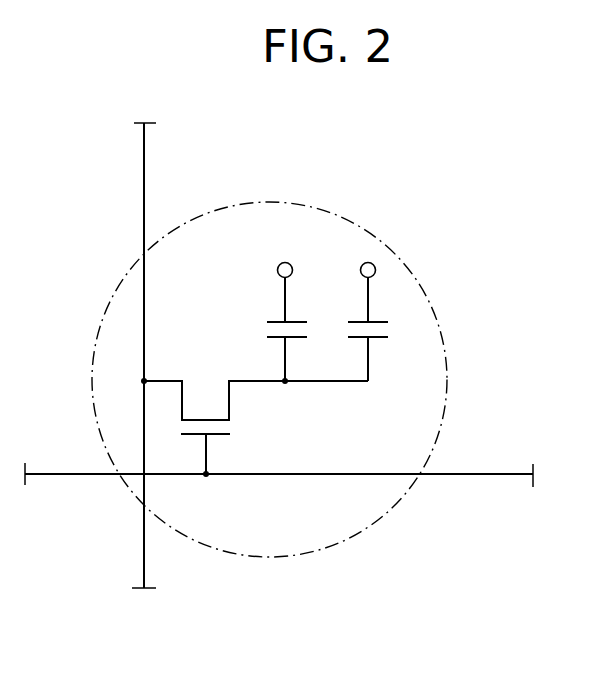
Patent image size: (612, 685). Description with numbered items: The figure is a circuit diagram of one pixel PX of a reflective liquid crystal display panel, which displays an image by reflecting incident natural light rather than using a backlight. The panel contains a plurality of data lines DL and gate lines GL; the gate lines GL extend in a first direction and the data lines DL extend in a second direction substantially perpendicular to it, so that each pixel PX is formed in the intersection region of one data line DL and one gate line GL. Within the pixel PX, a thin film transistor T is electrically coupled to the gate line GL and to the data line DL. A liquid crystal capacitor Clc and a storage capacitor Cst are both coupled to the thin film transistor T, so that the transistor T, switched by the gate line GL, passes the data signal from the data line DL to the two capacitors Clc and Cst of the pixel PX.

The pixel PX is at (448, 380).
The data line DL is at (144, 176).
The gate line GL is at (480, 475).
The thin film transistor T is at (254, 420).
The liquid crystal capacitor Clc is at (303, 330).
The storage capacitor Cst is at (387, 331).